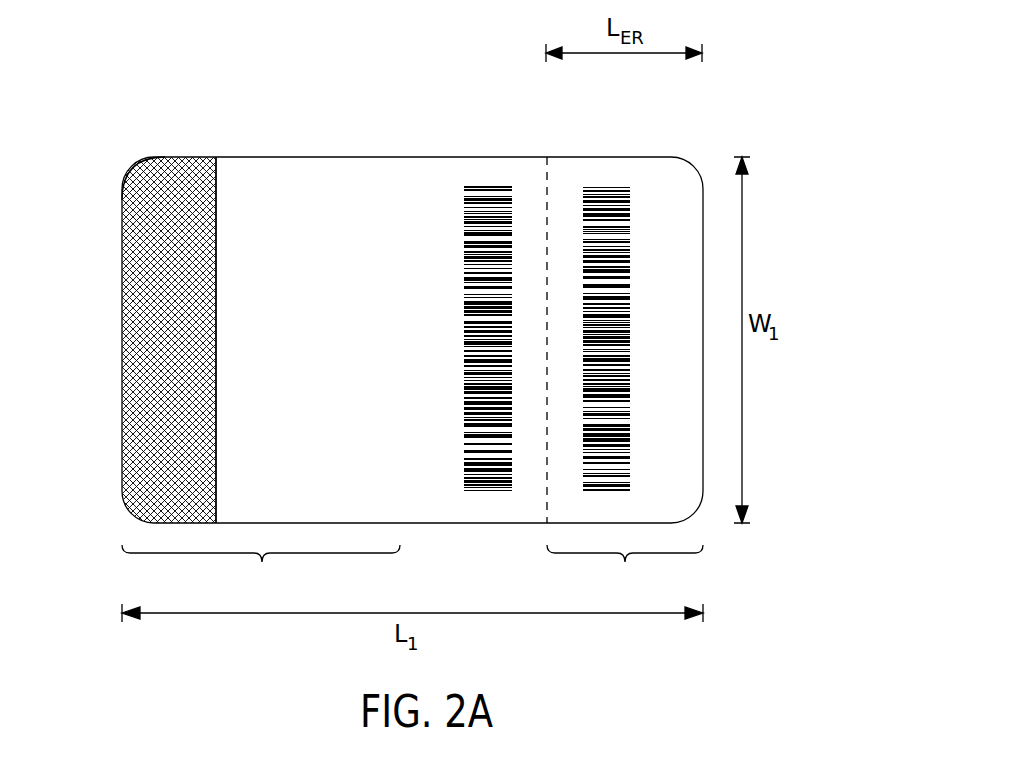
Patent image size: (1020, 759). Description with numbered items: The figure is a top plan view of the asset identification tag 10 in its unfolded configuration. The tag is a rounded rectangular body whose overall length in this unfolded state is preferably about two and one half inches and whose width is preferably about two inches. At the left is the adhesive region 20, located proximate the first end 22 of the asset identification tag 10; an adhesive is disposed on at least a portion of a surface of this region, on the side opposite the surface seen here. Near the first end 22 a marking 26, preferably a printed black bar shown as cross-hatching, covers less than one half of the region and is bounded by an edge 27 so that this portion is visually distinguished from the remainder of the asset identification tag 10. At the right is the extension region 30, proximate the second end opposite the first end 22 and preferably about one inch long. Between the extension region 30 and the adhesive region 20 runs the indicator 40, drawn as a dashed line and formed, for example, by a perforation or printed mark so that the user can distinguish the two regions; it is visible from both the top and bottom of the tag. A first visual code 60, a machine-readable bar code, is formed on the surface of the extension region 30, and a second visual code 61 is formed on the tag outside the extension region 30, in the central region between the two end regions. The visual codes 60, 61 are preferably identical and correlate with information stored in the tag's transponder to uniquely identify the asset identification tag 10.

The asset identification tag 10 is at (750, 98).
The adhesive region 20 is at (261, 575).
The first end 22 is at (122, 332).
The marking 26 is at (146, 172).
The edge 27 is at (216, 180).
The extension region 30 is at (625, 575).
The indicator 40 is at (545, 162).
The first visual code 60 is at (613, 187).
The second visual code 61 is at (489, 186).